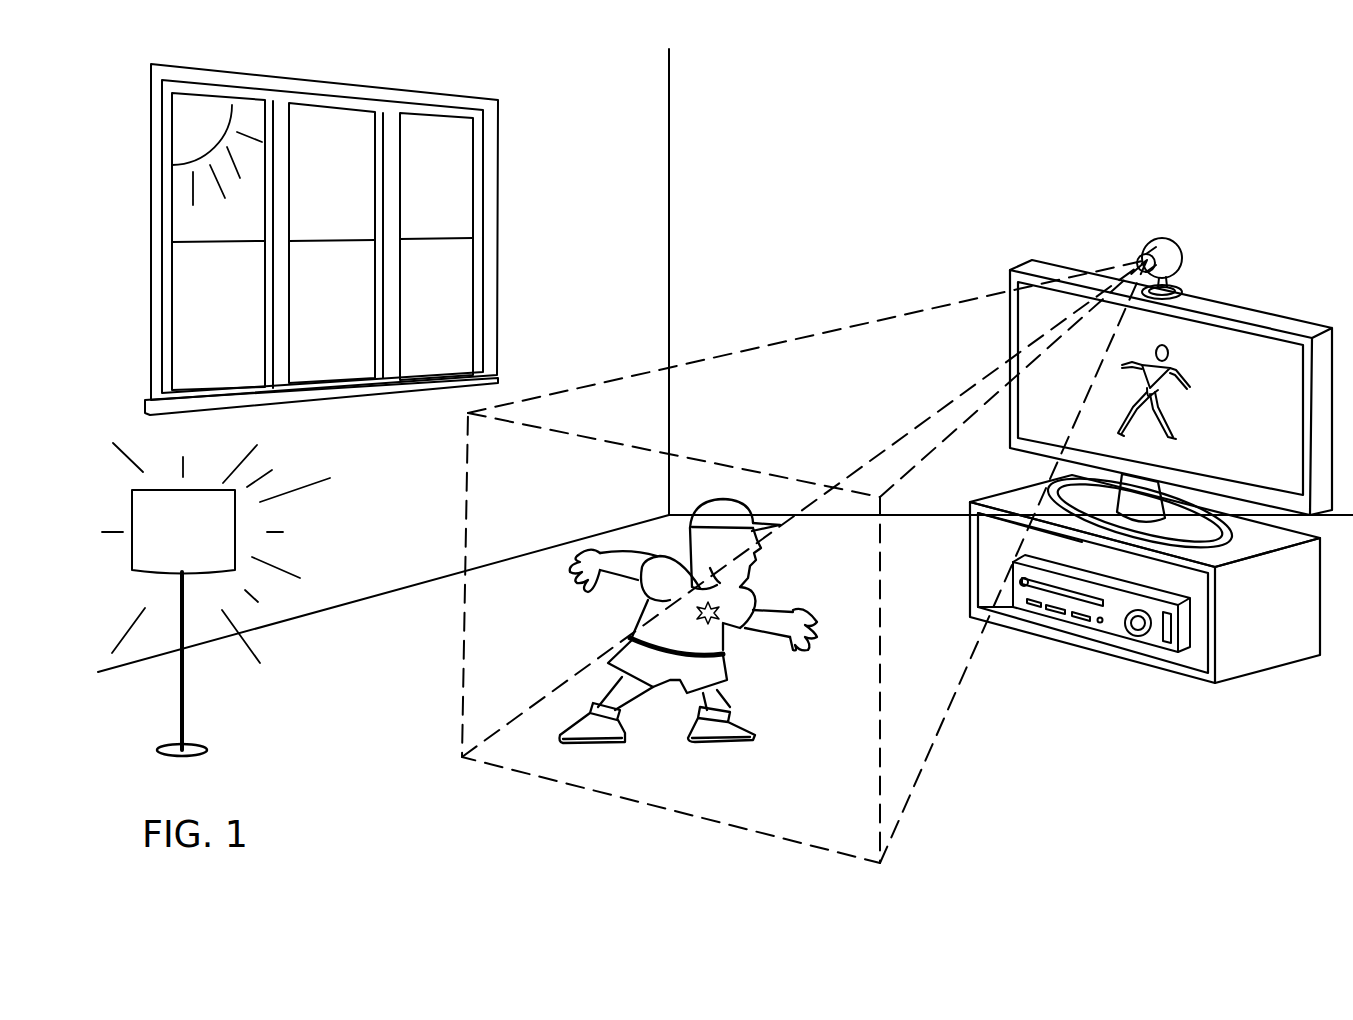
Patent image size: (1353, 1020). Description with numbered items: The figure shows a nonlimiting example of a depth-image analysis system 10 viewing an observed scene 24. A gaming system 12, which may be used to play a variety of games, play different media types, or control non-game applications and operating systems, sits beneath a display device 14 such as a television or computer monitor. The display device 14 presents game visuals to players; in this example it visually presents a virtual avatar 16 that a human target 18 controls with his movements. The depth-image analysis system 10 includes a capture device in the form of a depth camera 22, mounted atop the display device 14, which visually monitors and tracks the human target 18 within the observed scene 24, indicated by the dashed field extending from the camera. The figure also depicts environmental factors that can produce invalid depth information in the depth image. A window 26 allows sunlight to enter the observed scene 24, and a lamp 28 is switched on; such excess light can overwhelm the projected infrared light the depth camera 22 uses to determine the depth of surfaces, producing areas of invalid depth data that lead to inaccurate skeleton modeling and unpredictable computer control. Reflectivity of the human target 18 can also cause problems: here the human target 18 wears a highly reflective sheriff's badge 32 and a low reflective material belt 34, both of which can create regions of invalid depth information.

The depth-image analysis system 10 is at (755, 320).
The gaming system 12 is at (1113, 637).
The display device 14 is at (1299, 371).
The virtual avatar 16 is at (1167, 350).
The human target 18 is at (684, 621).
The depth camera 22 is at (1177, 247).
The observed scene 24 is at (536, 466).
The window 26 is at (498, 178).
The lamp 28 is at (193, 546).
The sheriff's badge 32 is at (733, 653).
The belt 34 is at (622, 632).